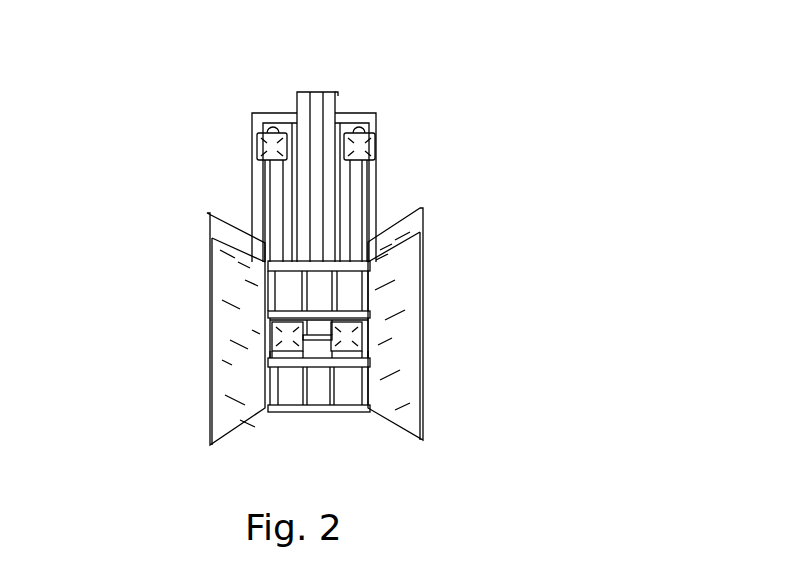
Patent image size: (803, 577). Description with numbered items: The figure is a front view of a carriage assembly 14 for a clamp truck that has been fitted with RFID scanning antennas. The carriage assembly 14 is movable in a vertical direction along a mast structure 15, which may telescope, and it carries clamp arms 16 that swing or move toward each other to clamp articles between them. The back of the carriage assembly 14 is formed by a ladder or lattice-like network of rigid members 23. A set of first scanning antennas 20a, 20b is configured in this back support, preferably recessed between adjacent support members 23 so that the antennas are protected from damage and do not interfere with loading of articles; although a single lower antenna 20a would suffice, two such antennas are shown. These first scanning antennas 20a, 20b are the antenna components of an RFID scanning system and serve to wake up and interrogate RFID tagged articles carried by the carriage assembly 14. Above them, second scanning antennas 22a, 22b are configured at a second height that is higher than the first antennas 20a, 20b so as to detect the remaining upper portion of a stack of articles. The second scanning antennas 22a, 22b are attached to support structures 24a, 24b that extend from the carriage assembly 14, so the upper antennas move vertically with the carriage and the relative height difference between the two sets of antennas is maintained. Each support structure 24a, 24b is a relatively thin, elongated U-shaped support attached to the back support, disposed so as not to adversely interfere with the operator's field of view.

The carriage assembly 14 is at (201, 150).
The mast structure 15 is at (313, 92).
The clamp arms 16 is at (247, 287).
The first scanning antenna 20a is at (345, 336).
The first scanning antenna 20b is at (283, 338).
The second scanning antenna 22a is at (368, 138).
The second scanning antenna 22b is at (262, 140).
The rigid members 23 is at (303, 368).
The support structure 24a is at (360, 190).
The support structure 24b is at (282, 205).